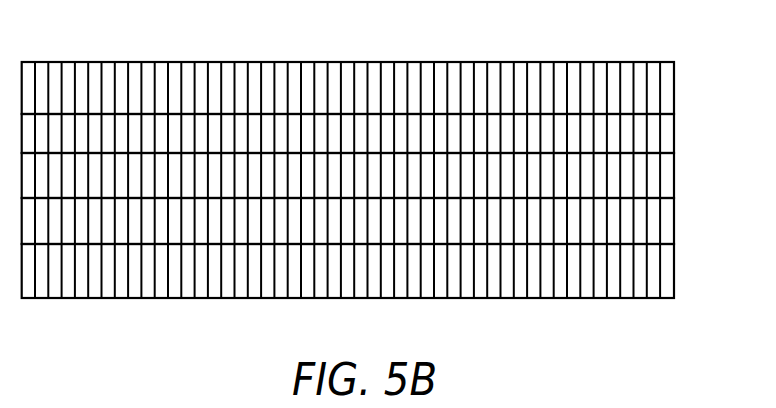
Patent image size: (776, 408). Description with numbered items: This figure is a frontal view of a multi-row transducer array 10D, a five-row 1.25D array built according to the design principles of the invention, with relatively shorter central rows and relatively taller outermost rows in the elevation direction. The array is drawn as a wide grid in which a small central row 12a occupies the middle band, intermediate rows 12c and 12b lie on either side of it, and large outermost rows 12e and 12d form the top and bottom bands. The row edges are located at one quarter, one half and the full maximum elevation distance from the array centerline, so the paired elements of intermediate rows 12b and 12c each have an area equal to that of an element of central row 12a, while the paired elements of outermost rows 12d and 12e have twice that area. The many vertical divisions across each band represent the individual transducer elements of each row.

The multi-row transducer array 10D is at (382, 152).
The outermost row 12e is at (674, 91).
The intermediate row 12c is at (674, 134).
The central row 12a is at (674, 181).
The intermediate row 12b is at (674, 228).
The outermost row 12d is at (674, 273).